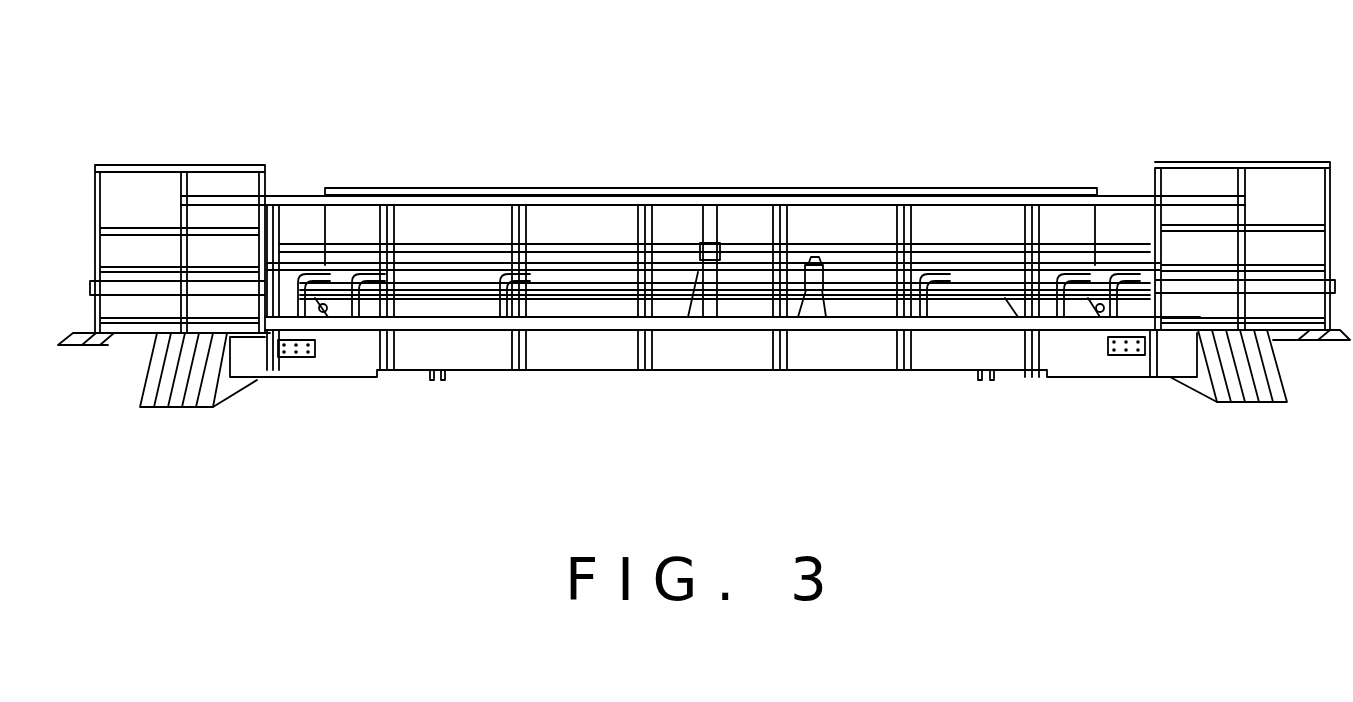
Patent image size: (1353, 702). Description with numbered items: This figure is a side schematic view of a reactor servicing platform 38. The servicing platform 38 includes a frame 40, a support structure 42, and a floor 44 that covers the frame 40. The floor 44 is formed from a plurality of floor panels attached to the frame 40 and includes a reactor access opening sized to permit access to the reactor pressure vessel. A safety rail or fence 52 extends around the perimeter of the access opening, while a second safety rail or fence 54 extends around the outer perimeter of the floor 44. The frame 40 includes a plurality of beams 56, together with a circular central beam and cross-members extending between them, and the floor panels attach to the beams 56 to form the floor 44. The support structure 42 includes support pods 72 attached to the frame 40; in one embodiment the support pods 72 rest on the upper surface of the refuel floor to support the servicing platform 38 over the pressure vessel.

The reactor servicing platform 38 is at (960, 107).
The frame 40 is at (710, 368).
The support structure 42 is at (130, 398).
The floor 44 is at (462, 312).
The safety rail or fence 52 is at (438, 190).
The safety rail or fence 54 is at (293, 195).
The beams 56 is at (950, 348).
The support pods 72 is at (217, 383).